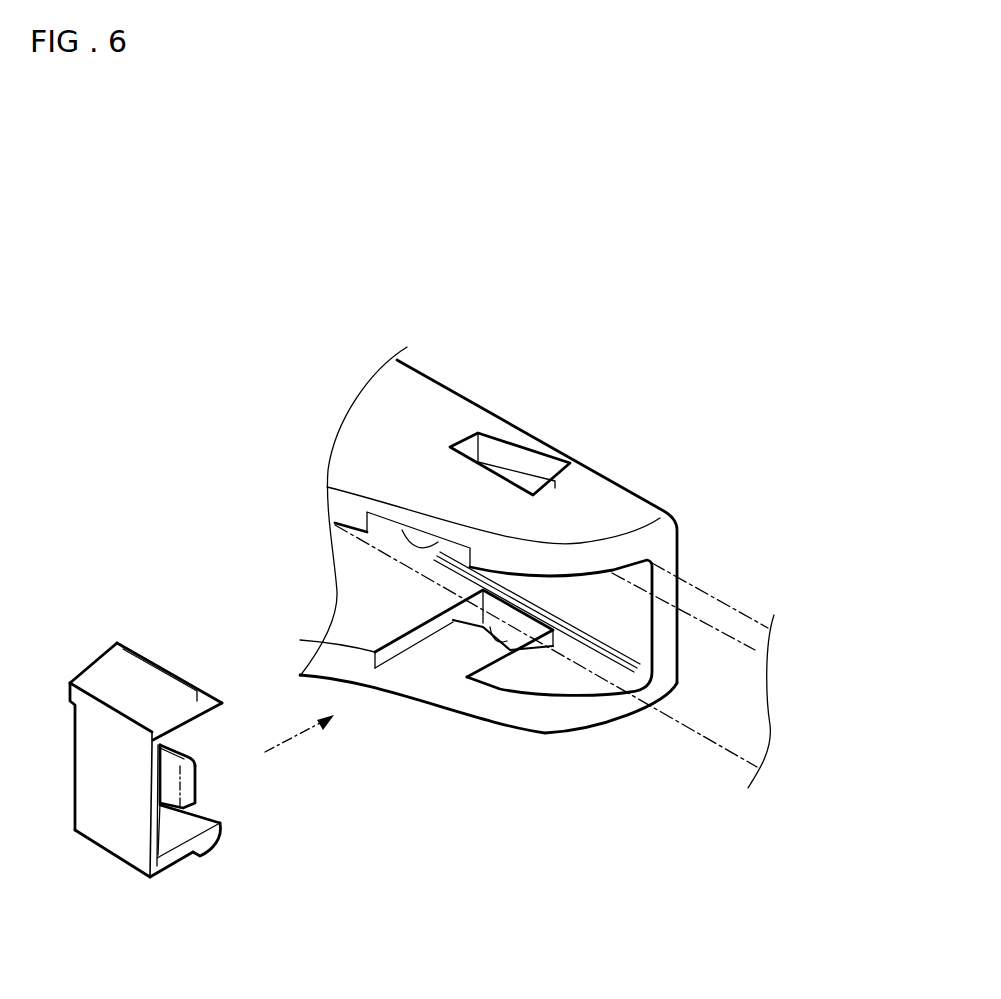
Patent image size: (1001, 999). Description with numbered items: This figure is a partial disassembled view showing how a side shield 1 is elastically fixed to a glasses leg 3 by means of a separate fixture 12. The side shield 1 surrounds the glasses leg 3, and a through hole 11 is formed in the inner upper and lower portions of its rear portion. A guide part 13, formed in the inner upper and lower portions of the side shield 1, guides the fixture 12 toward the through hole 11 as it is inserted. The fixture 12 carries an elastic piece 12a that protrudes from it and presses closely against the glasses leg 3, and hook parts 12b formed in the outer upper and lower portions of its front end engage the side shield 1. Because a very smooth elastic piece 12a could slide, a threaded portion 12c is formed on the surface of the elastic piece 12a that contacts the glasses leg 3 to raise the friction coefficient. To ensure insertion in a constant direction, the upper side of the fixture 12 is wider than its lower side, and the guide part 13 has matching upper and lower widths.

The side shield 1 is at (423, 398).
The glasses leg 3 is at (697, 732).
The through hole 11 is at (577, 461).
The guide part 13 is at (445, 530).
The fixture 12 is at (107, 830).
The elastic piece 12a is at (192, 785).
The hook part 12b is at (148, 663).
The threaded portion 12c is at (163, 746).